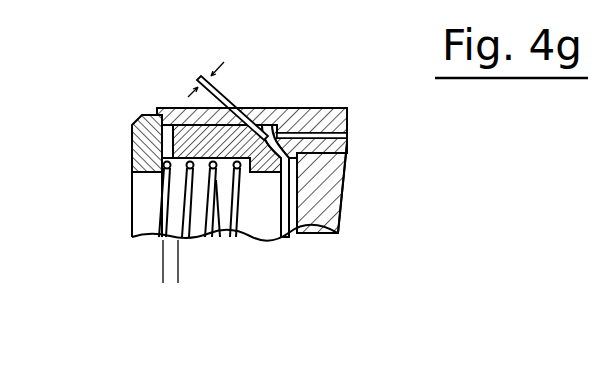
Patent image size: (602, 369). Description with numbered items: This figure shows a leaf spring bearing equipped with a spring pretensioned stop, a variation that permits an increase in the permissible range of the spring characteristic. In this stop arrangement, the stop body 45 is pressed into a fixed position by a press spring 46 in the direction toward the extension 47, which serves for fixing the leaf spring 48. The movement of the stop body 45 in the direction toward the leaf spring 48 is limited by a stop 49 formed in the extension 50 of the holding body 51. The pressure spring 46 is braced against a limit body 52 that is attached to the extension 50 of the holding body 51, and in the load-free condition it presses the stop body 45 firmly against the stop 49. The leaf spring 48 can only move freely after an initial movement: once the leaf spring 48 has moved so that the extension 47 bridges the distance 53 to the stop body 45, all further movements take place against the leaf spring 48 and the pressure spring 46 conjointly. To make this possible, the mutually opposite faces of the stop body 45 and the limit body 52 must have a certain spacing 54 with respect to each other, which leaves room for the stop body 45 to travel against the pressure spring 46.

The stop body 45 is at (267, 168).
The press spring 46 is at (216, 230).
The extension 47 is at (350, 148).
The leaf spring 48 is at (330, 205).
The stop 49 is at (179, 124).
The extension 50 is at (259, 112).
The holding body 51 is at (330, 106).
The limit body 52 is at (132, 157).
The distance 53 is at (198, 78).
The spacing 54 is at (125, 273).